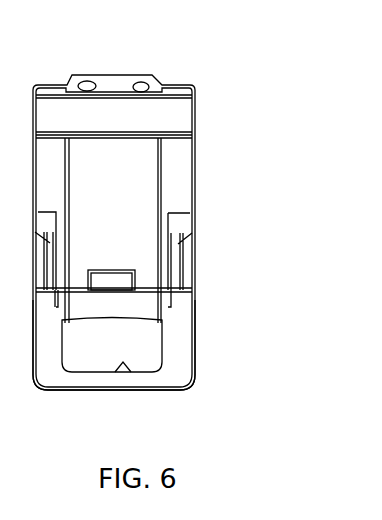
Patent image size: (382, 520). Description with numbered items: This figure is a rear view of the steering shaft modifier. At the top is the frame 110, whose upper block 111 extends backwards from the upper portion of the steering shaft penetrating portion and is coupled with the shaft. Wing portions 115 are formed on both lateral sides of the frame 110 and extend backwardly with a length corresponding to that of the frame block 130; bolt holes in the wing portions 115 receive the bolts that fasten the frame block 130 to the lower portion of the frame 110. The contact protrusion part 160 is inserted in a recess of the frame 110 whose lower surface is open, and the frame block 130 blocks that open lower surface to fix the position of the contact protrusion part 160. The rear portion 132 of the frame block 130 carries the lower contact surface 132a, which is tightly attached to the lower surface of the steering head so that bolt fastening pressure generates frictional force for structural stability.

The frame 110 is at (199, 77).
The upper block 111 is at (170, 115).
The wing portions 115 is at (182, 263).
The contact protrusion part 160 is at (123, 268).
The frame block 130 is at (202, 337).
The rear portion 132 is at (85, 390).
The lower contact surface 132a is at (137, 383).